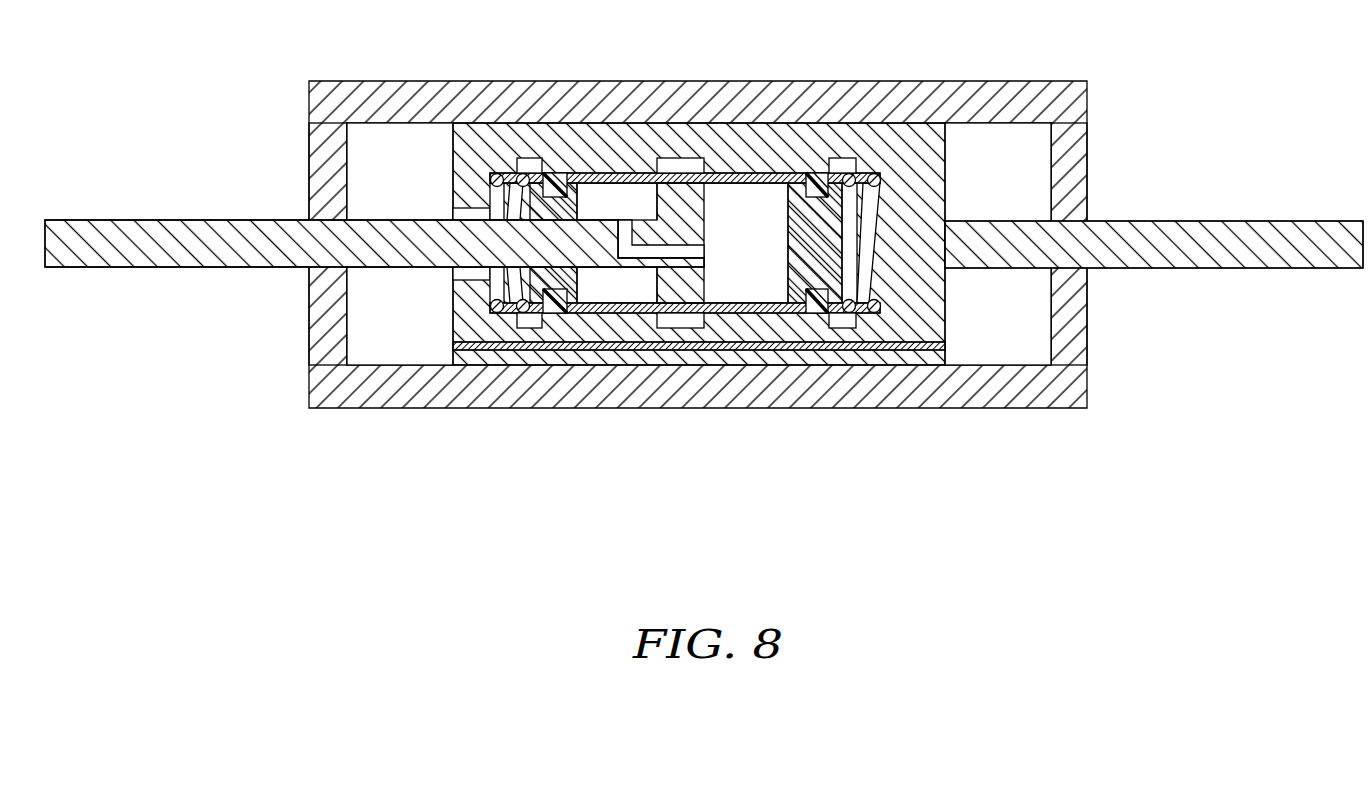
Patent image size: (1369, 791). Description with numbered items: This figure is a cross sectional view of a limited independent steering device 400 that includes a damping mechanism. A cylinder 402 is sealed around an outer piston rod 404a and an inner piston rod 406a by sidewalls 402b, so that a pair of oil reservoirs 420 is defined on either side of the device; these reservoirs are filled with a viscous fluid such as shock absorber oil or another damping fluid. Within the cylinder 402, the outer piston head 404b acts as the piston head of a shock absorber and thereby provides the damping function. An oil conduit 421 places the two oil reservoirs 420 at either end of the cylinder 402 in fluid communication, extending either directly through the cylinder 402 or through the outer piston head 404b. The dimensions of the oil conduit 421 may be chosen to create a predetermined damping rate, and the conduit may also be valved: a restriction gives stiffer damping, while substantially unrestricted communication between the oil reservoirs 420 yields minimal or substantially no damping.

The linear actuator assembly 400 is at (704, 277).
The cylinder 402 is at (915, 110).
The sidewalls 402b is at (310, 158).
The outer piston rod 404a is at (1252, 260).
The outer piston head 404b is at (699, 234).
The inner piston rod 406a is at (147, 258).
The oil reservoirs 420 is at (397, 150).
The oil conduit 421 is at (785, 350).